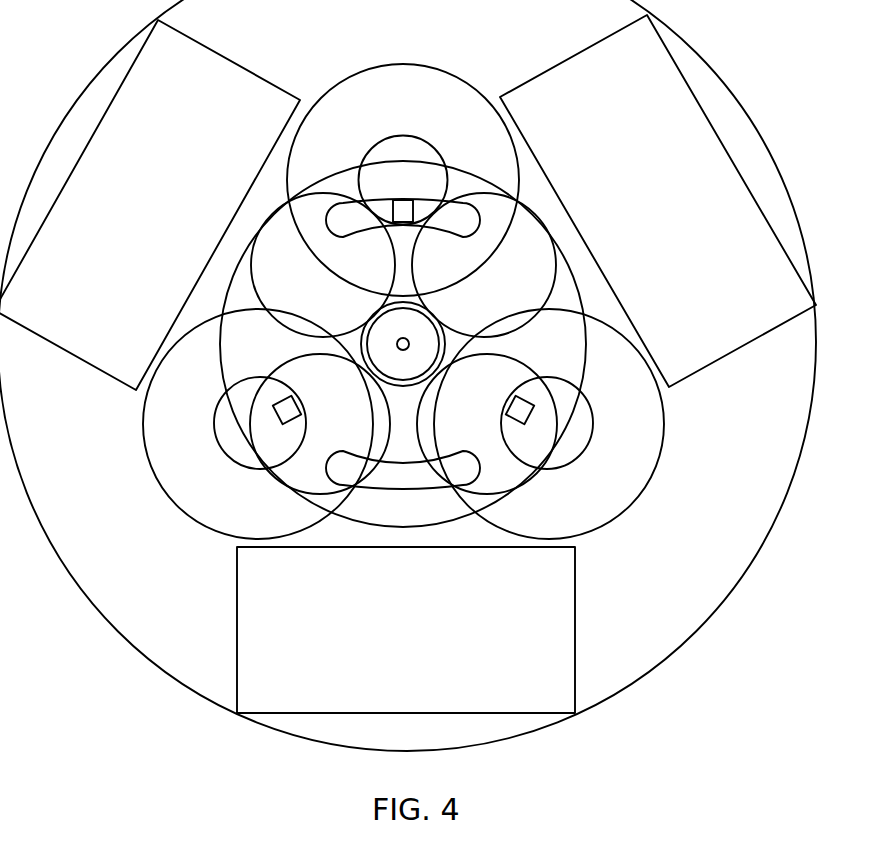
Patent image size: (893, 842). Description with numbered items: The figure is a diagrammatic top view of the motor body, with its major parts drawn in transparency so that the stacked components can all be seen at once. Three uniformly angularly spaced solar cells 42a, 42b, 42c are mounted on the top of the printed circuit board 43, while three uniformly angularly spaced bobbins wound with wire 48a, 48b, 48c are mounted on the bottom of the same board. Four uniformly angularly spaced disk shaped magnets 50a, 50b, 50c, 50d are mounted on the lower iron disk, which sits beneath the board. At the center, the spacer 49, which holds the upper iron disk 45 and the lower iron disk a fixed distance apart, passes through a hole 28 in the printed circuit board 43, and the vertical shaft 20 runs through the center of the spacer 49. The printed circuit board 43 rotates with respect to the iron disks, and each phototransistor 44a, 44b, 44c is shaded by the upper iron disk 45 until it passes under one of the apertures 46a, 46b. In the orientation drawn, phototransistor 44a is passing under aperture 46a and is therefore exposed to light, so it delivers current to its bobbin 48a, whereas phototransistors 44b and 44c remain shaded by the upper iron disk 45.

The vertical shaft 20 is at (409, 342).
The hole 28 is at (358, 334).
The solar cell 42a is at (576, 592).
The solar cell 42b is at (252, 68).
The solar cell 42c is at (742, 346).
The printed circuit board 43 is at (768, 150).
The phototransistor 44a is at (408, 224).
The phototransistor 44b is at (300, 411).
The phototransistor 44c is at (508, 404).
The upper iron disk 45 is at (361, 523).
The aperture 46a is at (492, 207).
The aperture 46b is at (431, 492).
The bobbin wound with wire 48a is at (455, 75).
The bobbin wound with wire 48b is at (238, 537).
The bobbin wound with wire 48c is at (665, 428).
The spacer 49 is at (388, 327).
The disk shaped magnet 50a is at (252, 275).
The disk shaped magnet 50b is at (556, 271).
The disk shaped magnet 50c is at (518, 362).
The disk shaped magnet 50d is at (283, 366).